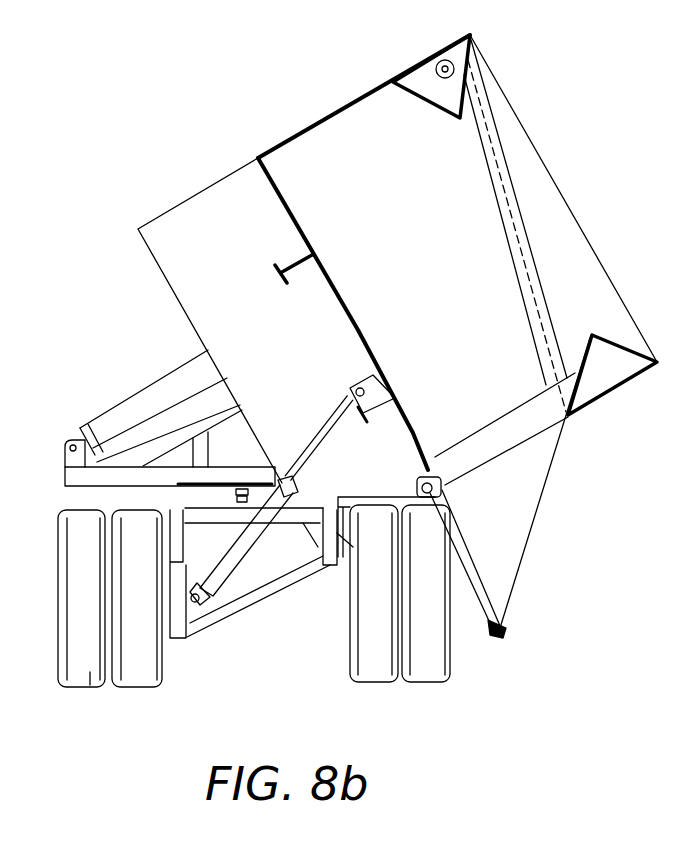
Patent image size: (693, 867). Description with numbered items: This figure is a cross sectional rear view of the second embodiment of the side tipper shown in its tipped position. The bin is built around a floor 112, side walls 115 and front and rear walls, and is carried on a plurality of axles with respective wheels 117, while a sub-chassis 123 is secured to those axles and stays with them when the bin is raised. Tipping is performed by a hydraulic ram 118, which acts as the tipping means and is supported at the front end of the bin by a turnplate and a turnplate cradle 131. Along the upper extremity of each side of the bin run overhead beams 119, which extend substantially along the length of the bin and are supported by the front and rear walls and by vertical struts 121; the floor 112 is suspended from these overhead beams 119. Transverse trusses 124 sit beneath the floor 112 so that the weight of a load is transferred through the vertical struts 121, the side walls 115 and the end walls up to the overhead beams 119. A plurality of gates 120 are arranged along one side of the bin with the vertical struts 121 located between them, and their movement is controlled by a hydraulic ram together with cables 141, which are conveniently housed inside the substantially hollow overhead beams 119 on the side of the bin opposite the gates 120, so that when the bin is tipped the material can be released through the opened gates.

The floor 112 is at (337, 292).
The side walls 115 is at (312, 123).
The wheels 117 is at (90, 688).
The hydraulic ram 118 is at (132, 403).
The overhead beams 119 is at (420, 75).
The gates 120 is at (485, 577).
The vertical struts 121 is at (478, 440).
The sub-chassis 123 is at (325, 577).
The transverse trusses 124 is at (183, 232).
The turnplate cradle 131 is at (67, 475).
The cables 141 is at (533, 527).